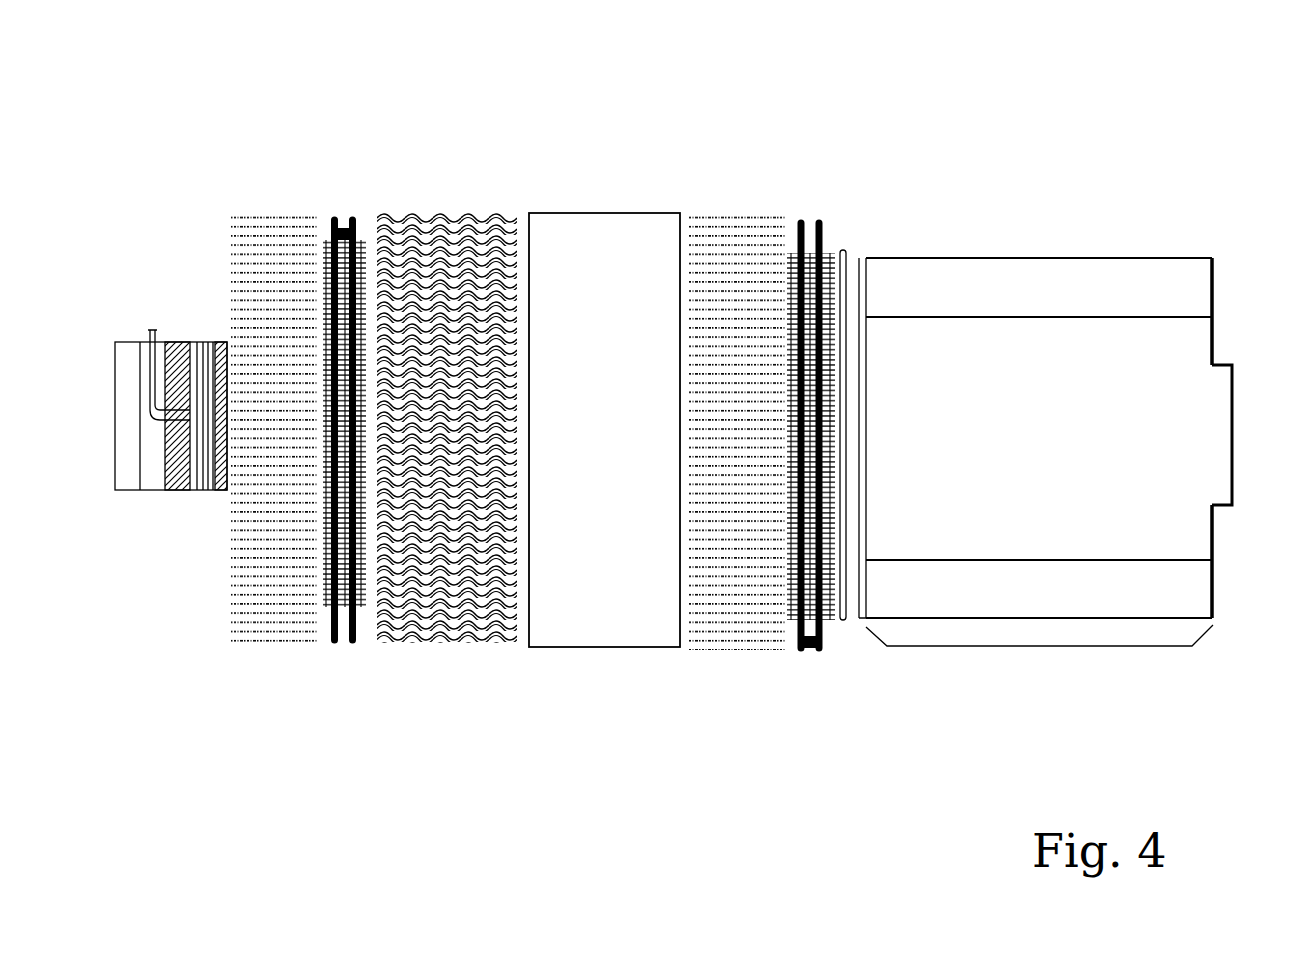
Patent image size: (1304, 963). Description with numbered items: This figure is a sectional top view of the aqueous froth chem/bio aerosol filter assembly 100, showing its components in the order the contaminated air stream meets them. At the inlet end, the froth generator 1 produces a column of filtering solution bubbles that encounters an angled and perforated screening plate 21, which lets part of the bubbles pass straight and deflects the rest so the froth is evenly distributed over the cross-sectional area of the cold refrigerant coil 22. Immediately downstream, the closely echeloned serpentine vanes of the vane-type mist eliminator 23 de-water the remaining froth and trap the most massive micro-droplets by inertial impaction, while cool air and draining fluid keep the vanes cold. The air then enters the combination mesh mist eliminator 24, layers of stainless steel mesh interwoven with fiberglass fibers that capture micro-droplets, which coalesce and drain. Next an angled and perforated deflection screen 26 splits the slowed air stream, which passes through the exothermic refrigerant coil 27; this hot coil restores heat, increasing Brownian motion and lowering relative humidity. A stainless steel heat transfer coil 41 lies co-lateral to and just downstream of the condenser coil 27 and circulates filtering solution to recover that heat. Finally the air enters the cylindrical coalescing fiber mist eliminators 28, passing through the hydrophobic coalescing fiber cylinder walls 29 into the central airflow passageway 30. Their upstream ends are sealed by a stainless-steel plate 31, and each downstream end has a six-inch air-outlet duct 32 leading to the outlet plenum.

The filter assembly 100 is at (620, 118).
The froth generator 1 is at (153, 278).
The screening plate 21 is at (272, 647).
The cold refrigerant coil 22 is at (343, 640).
The vane-type mist eliminator 23 is at (445, 600).
The combination mesh mist eliminator 24 is at (588, 592).
The deflection screen 26 is at (741, 650).
The exothermic refrigerant coil 27 is at (809, 280).
The coalescing fiber mist eliminator 28 is at (1073, 447).
The coalescing fiber cylinder wall 29 is at (1090, 575).
The airflow passageway 30 is at (1110, 450).
The stainless-steel plate 31 is at (866, 262).
The air-outlet duct 32 is at (1232, 435).
The heat transfer coil 41 is at (847, 620).